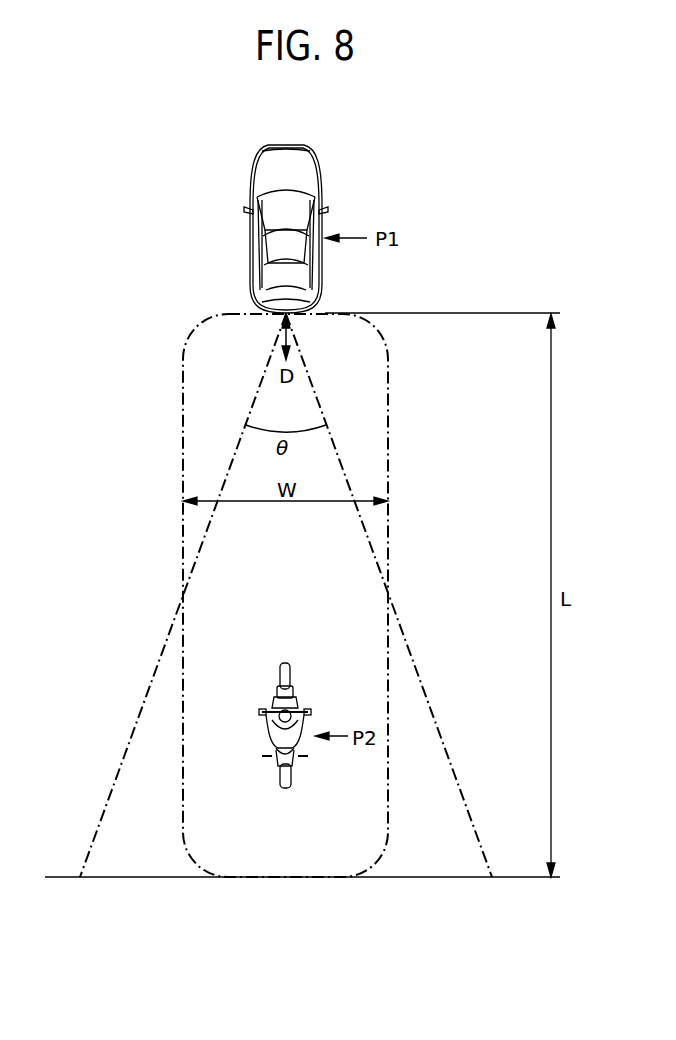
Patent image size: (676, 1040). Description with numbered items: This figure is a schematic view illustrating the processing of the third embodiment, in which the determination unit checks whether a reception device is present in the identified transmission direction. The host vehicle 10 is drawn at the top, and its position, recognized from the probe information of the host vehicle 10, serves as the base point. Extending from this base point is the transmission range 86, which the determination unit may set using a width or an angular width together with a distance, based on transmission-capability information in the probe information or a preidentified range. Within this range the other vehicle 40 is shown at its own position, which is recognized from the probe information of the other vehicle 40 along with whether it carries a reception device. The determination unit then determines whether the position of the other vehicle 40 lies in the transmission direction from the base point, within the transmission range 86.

The host vehicle 10 is at (312, 152).
The transmission range 86 is at (183, 412).
The other vehicle 40 is at (285, 790).